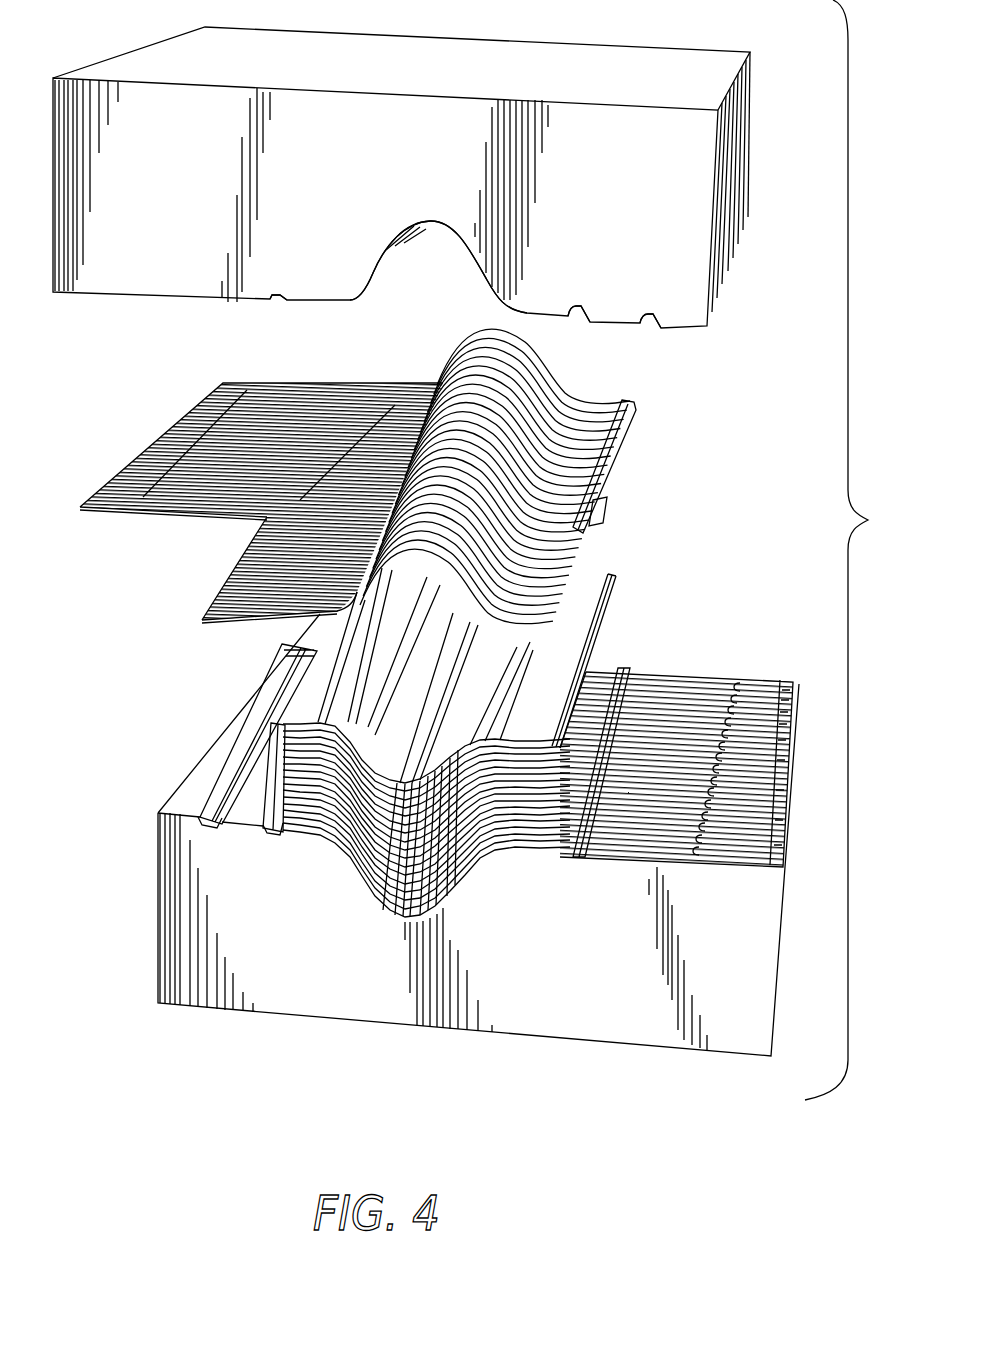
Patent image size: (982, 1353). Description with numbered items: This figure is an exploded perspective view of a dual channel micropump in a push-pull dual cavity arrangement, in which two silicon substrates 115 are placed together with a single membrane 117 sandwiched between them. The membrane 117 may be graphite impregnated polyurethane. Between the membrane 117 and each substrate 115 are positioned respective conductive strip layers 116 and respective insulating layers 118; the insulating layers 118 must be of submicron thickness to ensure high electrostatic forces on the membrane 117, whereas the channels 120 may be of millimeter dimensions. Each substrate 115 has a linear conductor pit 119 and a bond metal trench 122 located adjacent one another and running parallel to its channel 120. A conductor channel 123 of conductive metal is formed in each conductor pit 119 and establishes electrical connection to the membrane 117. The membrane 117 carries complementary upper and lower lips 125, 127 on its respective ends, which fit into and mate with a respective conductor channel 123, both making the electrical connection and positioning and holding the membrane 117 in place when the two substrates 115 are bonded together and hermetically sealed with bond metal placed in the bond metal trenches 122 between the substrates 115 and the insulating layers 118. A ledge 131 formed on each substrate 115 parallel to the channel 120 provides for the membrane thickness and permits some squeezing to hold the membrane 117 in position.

The silicon substrate 115 is at (730, 150).
The conductive strip layer 116 is at (138, 445).
The membrane 117 is at (627, 600).
The insulating layer 118 is at (220, 588).
The conductor pit 119 is at (575, 314).
The channel 120 is at (437, 240).
The bond metal trench 122 is at (643, 315).
The conductor channel 123 is at (623, 433).
The upper lip 125 is at (613, 578).
The lower lip 127 is at (283, 692).
The ledge 131 is at (273, 300).